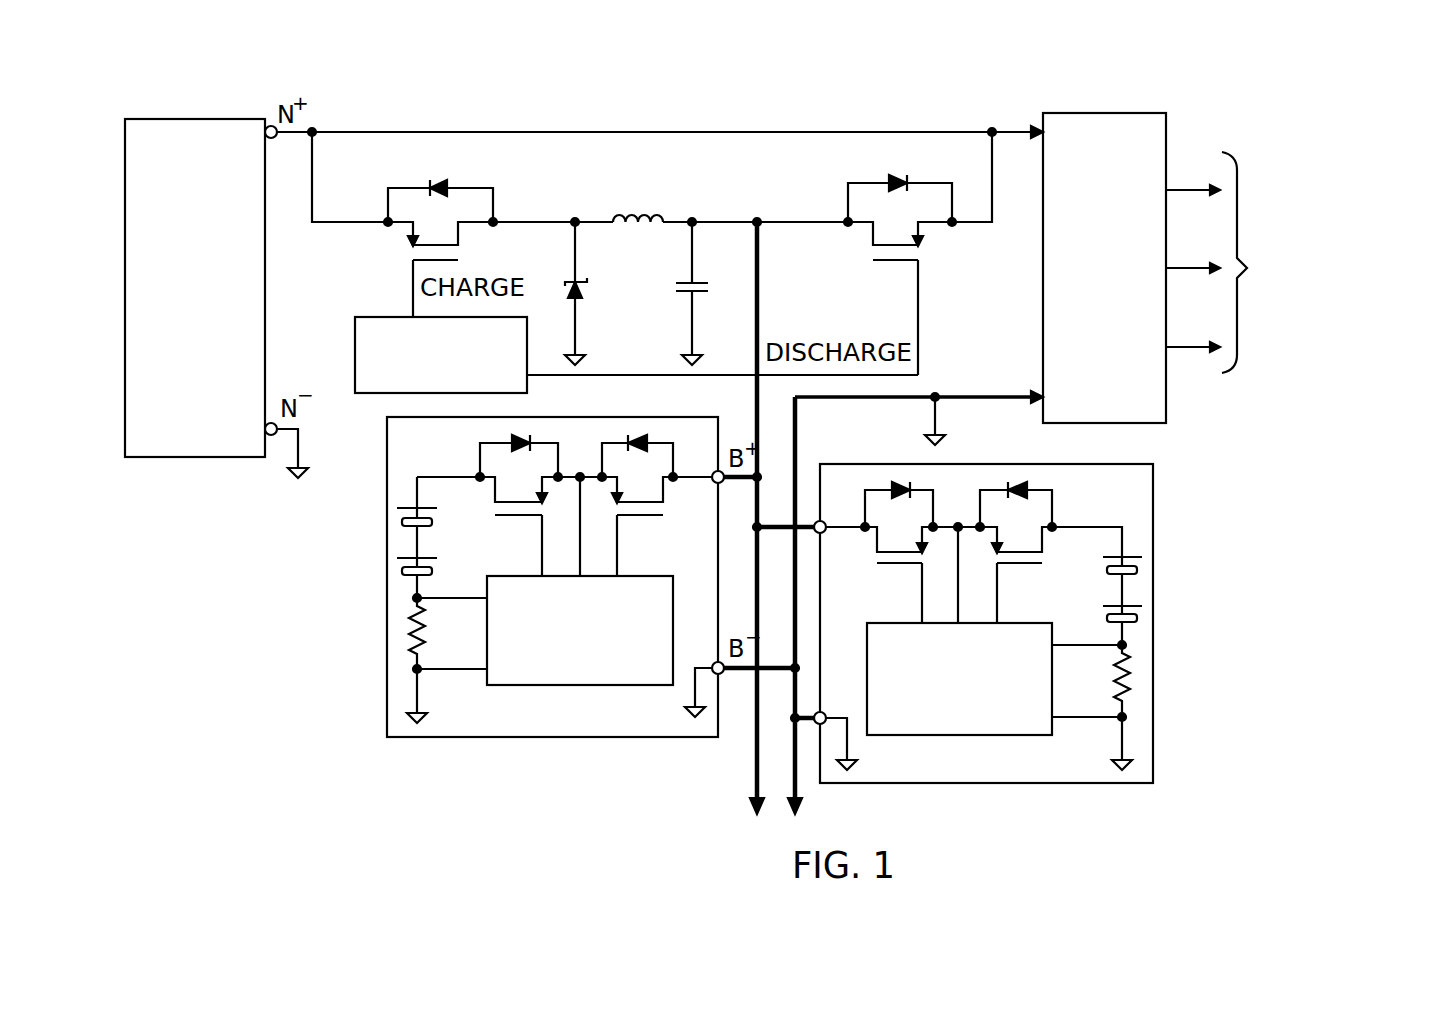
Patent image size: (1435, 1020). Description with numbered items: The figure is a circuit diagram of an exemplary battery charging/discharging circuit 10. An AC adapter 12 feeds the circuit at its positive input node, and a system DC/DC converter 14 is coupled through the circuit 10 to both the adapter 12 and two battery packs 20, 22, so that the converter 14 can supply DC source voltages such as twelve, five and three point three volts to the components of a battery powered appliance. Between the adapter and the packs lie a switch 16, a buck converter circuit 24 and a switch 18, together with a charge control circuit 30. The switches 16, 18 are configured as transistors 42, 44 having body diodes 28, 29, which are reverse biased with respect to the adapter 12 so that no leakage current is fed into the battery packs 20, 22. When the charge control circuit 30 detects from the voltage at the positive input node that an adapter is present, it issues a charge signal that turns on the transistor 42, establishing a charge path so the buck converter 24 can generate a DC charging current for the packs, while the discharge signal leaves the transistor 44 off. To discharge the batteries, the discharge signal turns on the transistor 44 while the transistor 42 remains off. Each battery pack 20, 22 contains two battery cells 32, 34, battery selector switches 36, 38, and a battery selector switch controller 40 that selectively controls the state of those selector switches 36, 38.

The battery charging/discharging circuit 10 is at (535, 100).
The AC adapter 12 is at (197, 457).
The system DC/DC converter 14 is at (1043, 312).
The switch 16 is at (426, 229).
The switch 18 is at (888, 257).
The battery pack 20 is at (515, 739).
The battery pack 22 is at (968, 785).
The buck converter circuit 24 is at (647, 198).
The body diode 28 is at (428, 180).
The body diode 29 is at (900, 178).
The charge control circuit 30 is at (355, 330).
The battery cell 32 is at (390, 521).
The battery cell 34 is at (390, 568).
The battery selector switch 36 is at (510, 525).
The battery selector switch 38 is at (648, 525).
The battery selector switch controller 40 is at (600, 688).
The transistor 42 is at (390, 243).
The transistor 44 is at (937, 242).